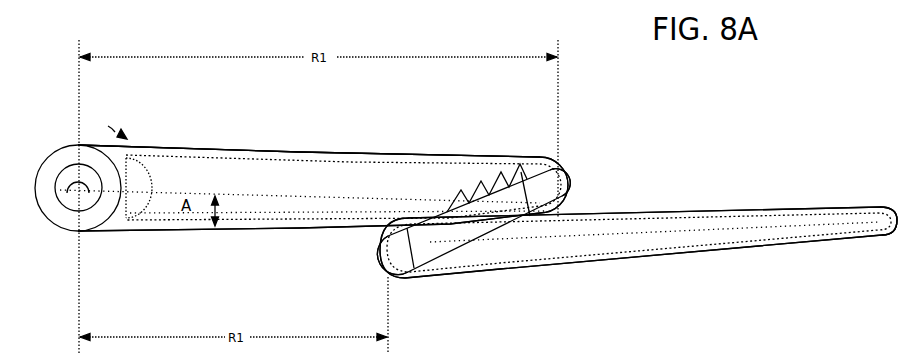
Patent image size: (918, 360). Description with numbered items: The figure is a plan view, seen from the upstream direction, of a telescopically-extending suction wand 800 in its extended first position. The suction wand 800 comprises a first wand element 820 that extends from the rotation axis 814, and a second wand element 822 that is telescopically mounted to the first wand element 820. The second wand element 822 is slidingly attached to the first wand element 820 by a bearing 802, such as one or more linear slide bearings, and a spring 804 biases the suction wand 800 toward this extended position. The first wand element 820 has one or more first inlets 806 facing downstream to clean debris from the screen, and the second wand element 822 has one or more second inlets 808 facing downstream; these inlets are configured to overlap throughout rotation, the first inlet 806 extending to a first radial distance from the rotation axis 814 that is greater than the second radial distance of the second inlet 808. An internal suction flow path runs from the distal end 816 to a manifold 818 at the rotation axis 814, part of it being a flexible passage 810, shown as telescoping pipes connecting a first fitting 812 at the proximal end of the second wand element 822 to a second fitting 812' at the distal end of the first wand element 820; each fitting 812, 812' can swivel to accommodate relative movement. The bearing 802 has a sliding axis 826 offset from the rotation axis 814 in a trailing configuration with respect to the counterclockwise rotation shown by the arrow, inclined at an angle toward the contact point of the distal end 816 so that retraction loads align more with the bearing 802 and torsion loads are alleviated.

The suction wand 800 is at (727, 128).
The bearing 802 is at (328, 226).
The spring 804 is at (490, 180).
The first inlet 806 is at (378, 150).
The second inlet 808 is at (776, 258).
The flexible passage 810 is at (482, 228).
The first fitting 812 is at (420, 282).
The second fitting 812' is at (594, 158).
The rotation axis 814 is at (60, 178).
The distal end 816 is at (893, 208).
The manifold 818 is at (76, 160).
The first wand element 820 is at (260, 148).
The second wand element 822 is at (661, 247).
The sliding axis 826 is at (128, 228).